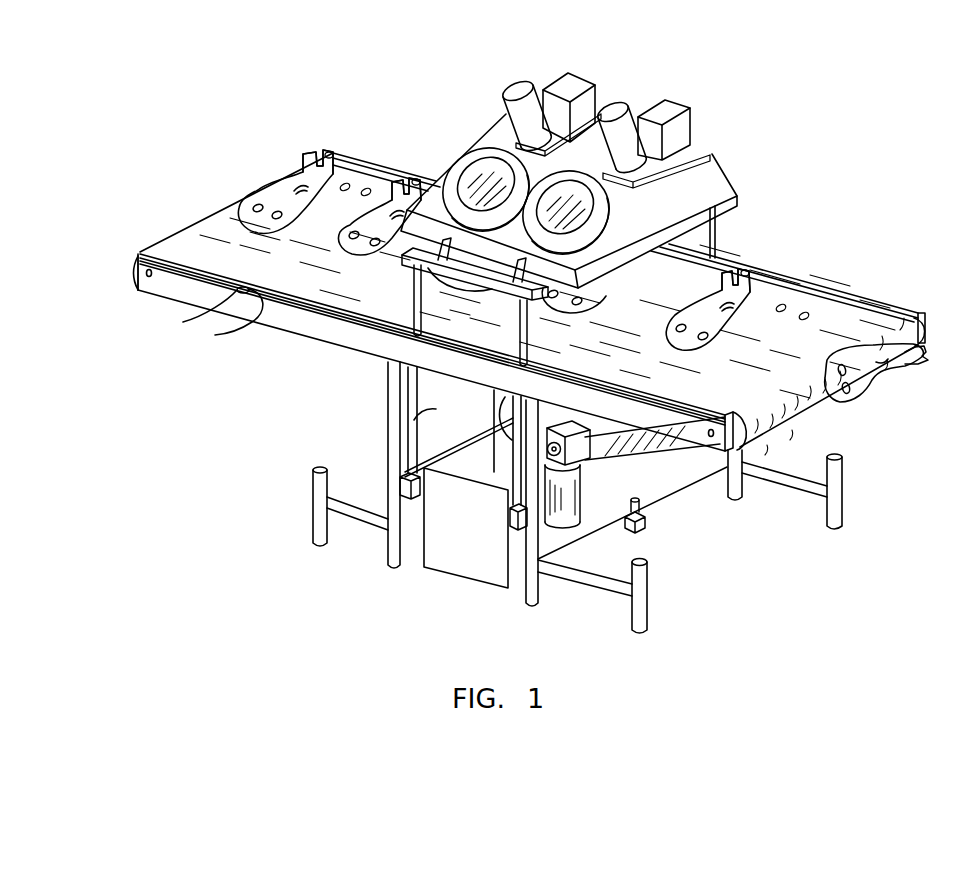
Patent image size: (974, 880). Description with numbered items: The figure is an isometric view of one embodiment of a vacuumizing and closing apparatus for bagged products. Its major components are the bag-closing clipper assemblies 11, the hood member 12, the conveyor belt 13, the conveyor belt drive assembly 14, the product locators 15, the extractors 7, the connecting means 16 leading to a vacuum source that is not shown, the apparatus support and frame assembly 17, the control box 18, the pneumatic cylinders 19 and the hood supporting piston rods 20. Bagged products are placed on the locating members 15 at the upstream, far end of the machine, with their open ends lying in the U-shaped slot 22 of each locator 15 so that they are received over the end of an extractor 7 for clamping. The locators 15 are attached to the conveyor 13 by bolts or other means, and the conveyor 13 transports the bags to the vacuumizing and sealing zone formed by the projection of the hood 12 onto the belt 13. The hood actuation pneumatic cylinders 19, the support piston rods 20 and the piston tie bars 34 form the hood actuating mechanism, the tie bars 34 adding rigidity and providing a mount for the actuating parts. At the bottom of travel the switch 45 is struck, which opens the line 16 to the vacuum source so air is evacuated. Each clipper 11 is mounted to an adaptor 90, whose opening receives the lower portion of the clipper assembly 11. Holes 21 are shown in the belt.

The extractor 7 is at (347, 133).
The bag-closing clipper assembly 11 is at (581, 74).
The hood member 12 is at (647, 237).
The conveyor belt 13 is at (872, 318).
The conveyor belt drive assembly 14 is at (597, 514).
The product locator 15 is at (273, 200).
The connecting means 16 is at (260, 311).
The apparatus support and frame assembly 17 is at (167, 291).
The control box 18 is at (482, 573).
The pneumatic cylinder 19 is at (413, 446).
The hood supporting piston rod 20 is at (408, 337).
The holes 21 is at (785, 300).
The U-shaped slot 22 is at (308, 160).
The piston tie bar 34 is at (412, 481).
The switch 45 is at (642, 528).
The adaptor 90 is at (711, 153).